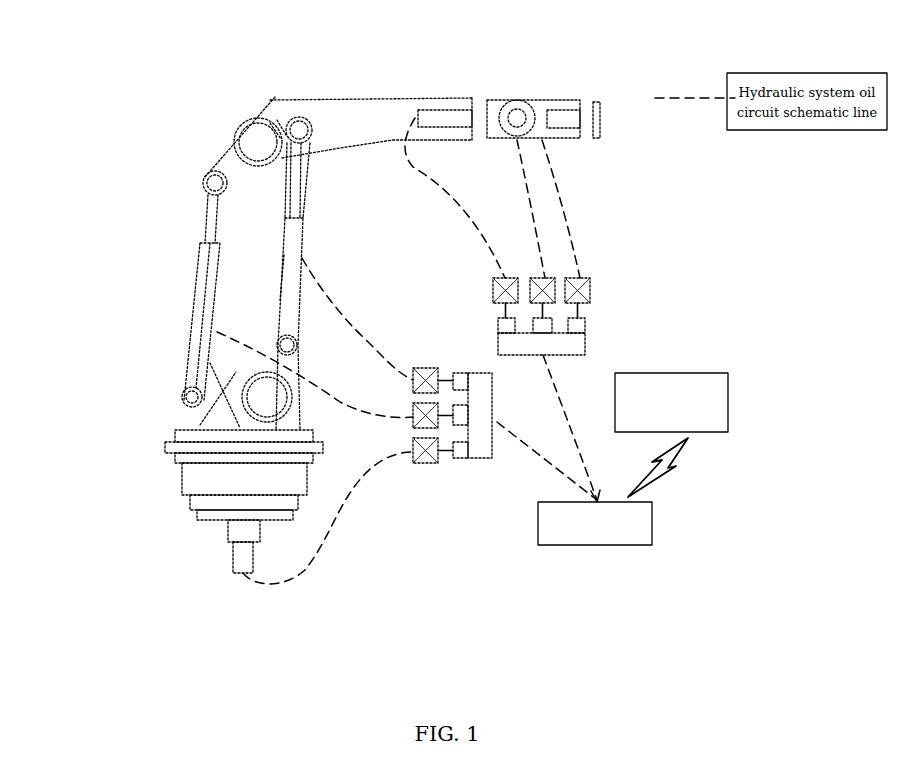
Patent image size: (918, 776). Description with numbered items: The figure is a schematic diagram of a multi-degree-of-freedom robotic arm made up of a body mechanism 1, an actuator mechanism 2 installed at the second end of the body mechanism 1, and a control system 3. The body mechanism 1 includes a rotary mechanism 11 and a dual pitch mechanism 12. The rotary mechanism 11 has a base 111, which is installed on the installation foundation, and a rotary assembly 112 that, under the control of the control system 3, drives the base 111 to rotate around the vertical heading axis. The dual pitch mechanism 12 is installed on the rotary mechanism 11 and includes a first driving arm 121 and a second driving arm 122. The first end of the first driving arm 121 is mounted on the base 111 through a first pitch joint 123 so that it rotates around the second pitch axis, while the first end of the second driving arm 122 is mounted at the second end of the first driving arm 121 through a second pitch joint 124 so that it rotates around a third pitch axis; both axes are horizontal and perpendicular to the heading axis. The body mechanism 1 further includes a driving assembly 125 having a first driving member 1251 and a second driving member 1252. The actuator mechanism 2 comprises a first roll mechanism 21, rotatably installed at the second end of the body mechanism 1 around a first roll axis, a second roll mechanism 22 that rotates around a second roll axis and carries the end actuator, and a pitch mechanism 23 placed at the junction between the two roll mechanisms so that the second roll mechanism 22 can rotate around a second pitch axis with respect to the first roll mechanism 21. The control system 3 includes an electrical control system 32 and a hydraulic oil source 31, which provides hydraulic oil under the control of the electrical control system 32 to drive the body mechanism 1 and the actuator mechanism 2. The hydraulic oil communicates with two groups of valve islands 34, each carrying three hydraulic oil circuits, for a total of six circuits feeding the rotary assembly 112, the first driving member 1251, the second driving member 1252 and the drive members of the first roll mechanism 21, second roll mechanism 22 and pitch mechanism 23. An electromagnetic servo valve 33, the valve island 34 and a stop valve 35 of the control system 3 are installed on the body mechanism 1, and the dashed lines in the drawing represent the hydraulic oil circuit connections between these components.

The body mechanism 1 is at (45, 250).
The rotary mechanism 11 is at (85, 470).
The base 111 is at (182, 480).
The rotary assembly 112 is at (243, 573).
The dual pitch mechanism 12 is at (78, 112).
The first driving arm 121 is at (243, 287).
The second driving arm 122 is at (370, 99).
The first pitch joint 123 is at (267, 397).
The second pitch joint 124 is at (257, 142).
The driving assembly 125 is at (128, 312).
The first driving member 1251 is at (190, 337).
The second driving member 1252 is at (278, 295).
The actuator mechanism 2 is at (437, 53).
The first roll mechanism 21 is at (452, 111).
The second roll mechanism 22 is at (572, 110).
The pitch mechanism 23 is at (517, 118).
The control system 3 is at (782, 243).
The hydraulic oil source 31 is at (652, 525).
The electrical control system 32 is at (713, 432).
The electromagnetic servo valve 33 is at (590, 323).
The valve island 34 is at (590, 345).
The stop valve 35 is at (590, 290).